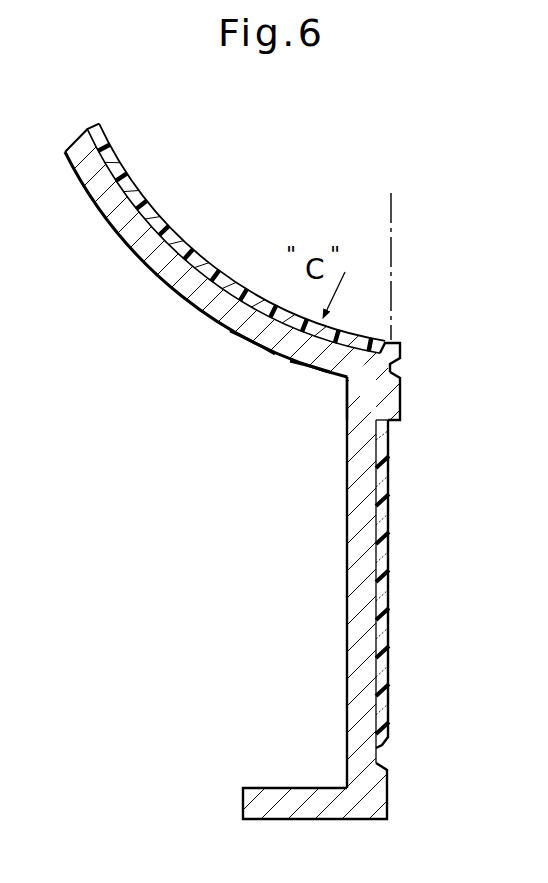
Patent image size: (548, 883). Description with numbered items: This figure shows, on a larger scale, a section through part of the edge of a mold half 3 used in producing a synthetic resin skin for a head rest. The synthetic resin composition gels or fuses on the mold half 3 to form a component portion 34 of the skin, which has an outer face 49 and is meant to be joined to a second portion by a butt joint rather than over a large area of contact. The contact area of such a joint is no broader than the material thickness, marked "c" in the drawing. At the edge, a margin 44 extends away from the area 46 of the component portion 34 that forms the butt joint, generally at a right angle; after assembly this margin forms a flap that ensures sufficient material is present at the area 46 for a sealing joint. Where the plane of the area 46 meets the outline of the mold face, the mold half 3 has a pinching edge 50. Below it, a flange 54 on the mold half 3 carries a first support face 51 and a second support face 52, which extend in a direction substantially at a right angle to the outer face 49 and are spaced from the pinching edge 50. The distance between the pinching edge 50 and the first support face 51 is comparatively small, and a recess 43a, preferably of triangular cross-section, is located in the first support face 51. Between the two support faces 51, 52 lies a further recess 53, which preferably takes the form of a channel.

The mold half 3 is at (169, 288).
The component portion 34 is at (179, 229).
The recess 43a is at (351, 407).
The margin 44 is at (401, 398).
The area 46 is at (393, 286).
The outer face 49 is at (257, 345).
The pinching edge 50 is at (308, 347).
The first support face 51 is at (401, 369).
The second support face 52 is at (389, 790).
The recess 53 is at (390, 600).
The flange 54 is at (367, 582).